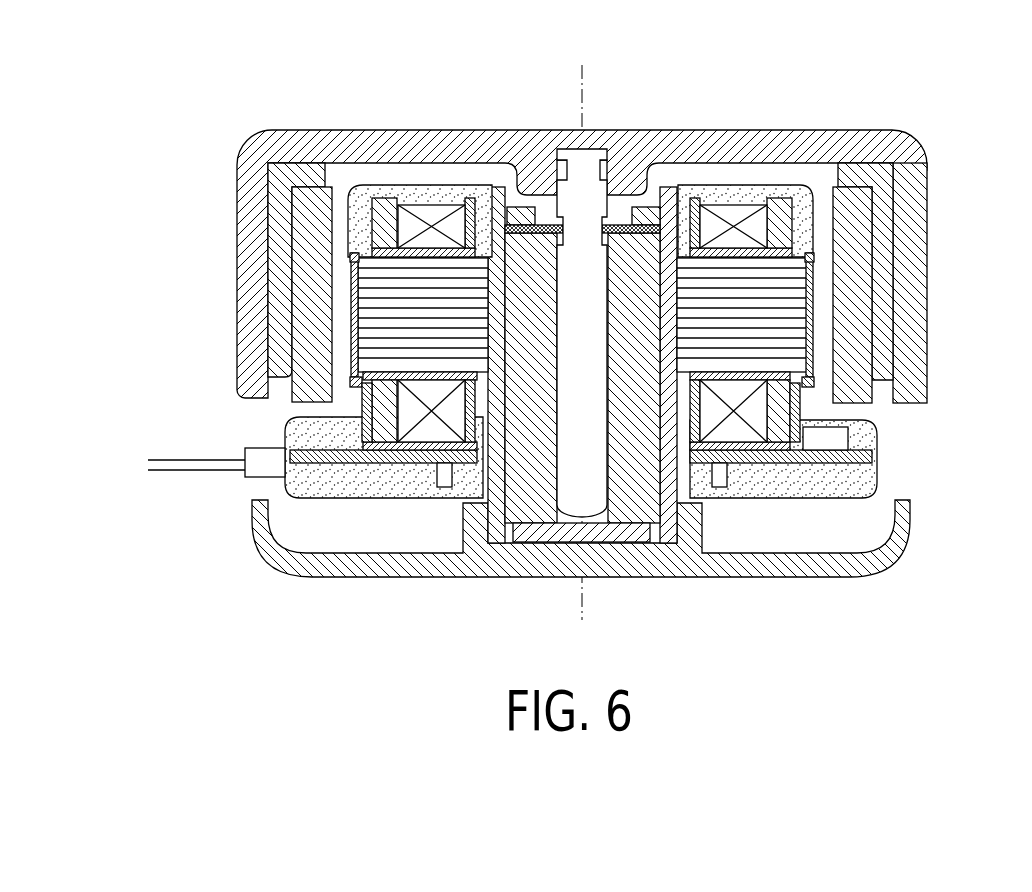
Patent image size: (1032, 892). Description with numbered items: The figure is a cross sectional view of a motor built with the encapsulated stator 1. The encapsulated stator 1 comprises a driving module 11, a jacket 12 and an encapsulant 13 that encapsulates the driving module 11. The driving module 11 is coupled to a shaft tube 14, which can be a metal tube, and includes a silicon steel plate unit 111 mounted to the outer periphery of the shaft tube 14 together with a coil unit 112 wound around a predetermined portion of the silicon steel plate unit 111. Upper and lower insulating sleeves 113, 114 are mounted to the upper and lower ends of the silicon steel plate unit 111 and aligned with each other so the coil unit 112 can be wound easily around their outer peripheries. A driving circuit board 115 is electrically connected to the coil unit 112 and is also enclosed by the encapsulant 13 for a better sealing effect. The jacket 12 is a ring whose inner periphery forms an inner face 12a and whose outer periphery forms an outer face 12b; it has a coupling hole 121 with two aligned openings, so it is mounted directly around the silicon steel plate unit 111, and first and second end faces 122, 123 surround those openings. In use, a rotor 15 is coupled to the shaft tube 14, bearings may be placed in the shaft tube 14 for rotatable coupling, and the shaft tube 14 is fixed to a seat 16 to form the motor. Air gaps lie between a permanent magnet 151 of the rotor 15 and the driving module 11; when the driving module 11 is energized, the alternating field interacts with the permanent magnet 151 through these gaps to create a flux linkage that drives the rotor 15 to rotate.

The encapsulated stator 1 is at (585, 362).
The driving module 11 is at (737, 172).
The silicon steel plate unit 111 is at (795, 303).
The coil unit 112 is at (708, 220).
The upper insulating sleeve 113 is at (780, 210).
The lower insulating sleeve 114 is at (802, 410).
The driving circuit board 115 is at (877, 457).
The jacket 12 is at (322, 347).
The inner face 12a is at (360, 303).
The outer face 12b is at (350, 317).
The coupling hole 121 is at (363, 250).
The first end face 122 is at (350, 253).
The second end face 123 is at (348, 382).
The encapsulant 13 is at (435, 188).
The shaft tube 14 is at (668, 542).
The rotor 15 is at (860, 130).
The permanent magnet 151 is at (857, 230).
The seat 16 is at (903, 537).